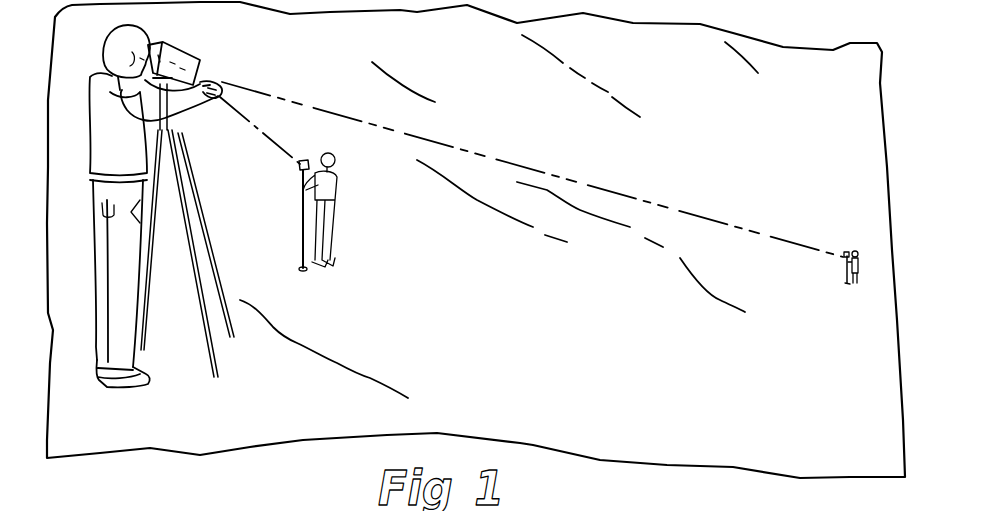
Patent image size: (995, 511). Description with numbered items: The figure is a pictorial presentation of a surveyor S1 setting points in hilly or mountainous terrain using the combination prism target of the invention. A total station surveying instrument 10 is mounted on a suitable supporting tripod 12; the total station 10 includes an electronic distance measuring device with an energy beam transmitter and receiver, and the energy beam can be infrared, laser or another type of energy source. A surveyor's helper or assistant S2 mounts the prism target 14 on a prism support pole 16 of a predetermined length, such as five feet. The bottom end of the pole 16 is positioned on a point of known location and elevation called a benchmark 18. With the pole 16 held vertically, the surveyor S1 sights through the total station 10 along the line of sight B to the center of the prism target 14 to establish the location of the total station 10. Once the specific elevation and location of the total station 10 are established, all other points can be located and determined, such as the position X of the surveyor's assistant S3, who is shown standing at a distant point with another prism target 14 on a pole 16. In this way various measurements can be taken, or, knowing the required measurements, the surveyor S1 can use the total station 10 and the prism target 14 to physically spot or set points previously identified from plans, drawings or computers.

The total station surveying instrument 10 is at (197, 60).
The supporting tripod 12 is at (213, 357).
The prism target 14 is at (300, 167).
The prism support pole 16 is at (303, 213).
The benchmark 18 is at (303, 273).
The surveyor S1 is at (98, 345).
The surveyor's assistant S2 is at (333, 225).
The surveyor's assistant S3 is at (857, 275).
The line of sight (beam) B is at (255, 128).
The position X is at (847, 282).